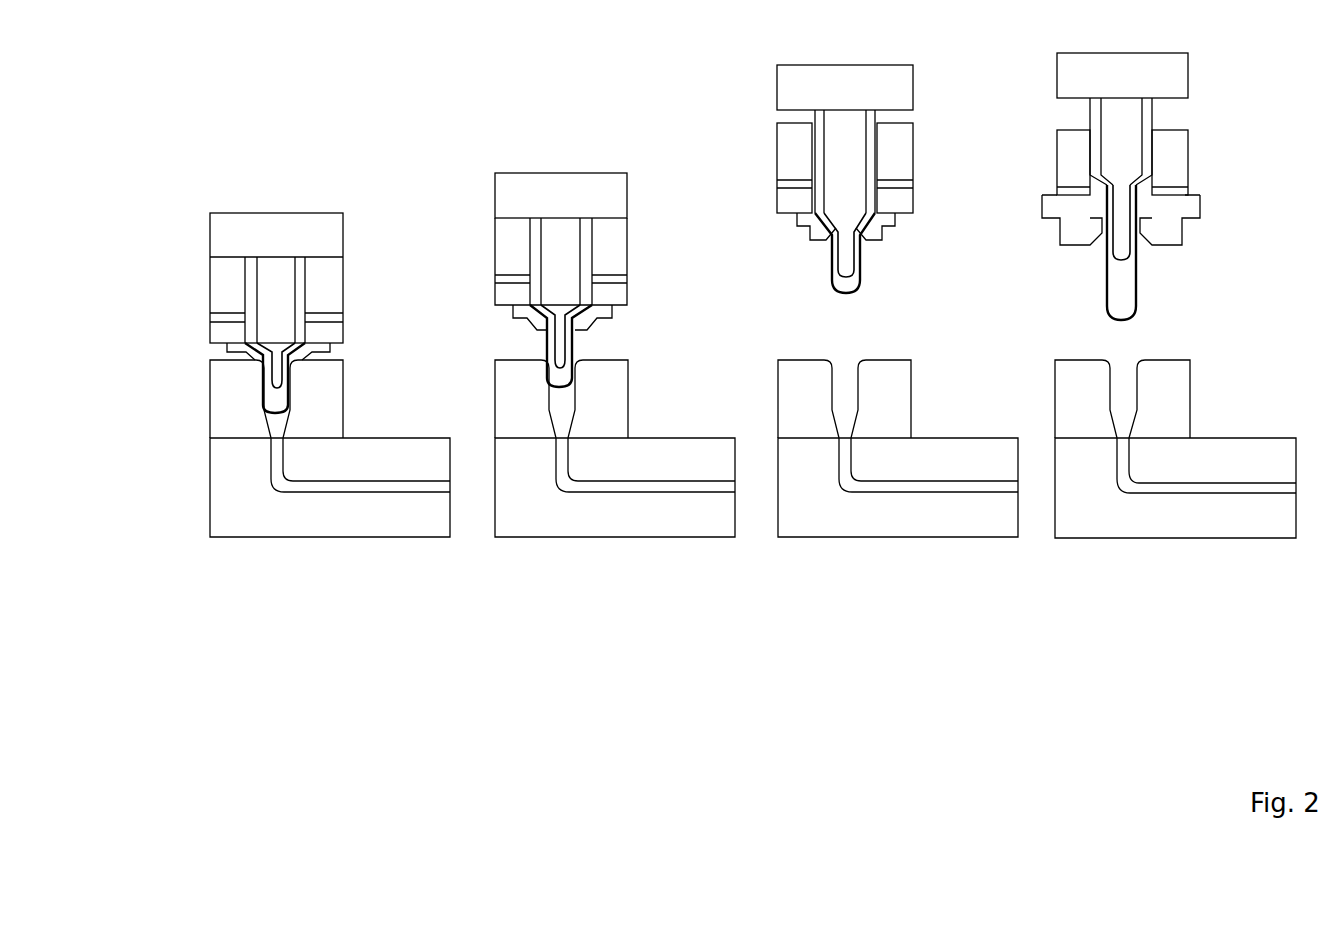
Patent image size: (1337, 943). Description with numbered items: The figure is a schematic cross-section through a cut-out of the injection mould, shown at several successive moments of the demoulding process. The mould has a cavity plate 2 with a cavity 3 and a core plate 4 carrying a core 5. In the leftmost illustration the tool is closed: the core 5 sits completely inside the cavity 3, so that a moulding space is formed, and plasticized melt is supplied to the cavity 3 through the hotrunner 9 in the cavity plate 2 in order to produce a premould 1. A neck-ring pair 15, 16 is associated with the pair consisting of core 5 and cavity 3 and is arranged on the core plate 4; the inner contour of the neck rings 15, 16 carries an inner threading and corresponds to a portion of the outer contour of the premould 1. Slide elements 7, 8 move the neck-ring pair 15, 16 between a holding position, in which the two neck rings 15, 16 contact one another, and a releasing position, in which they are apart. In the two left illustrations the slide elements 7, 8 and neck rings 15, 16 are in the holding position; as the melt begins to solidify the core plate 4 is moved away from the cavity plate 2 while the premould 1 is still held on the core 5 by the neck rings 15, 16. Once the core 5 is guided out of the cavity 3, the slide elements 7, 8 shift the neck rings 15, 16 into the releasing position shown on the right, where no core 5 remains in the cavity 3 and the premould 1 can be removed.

The premould 1 is at (1122, 297).
The cavity plate 2 is at (512, 405).
The cavity 3 is at (1118, 388).
The core plate 4 is at (578, 183).
The core 5 is at (275, 385).
The slide element 7 is at (795, 200).
The slide element 8 is at (905, 213).
The hotrunner 9 is at (343, 493).
The neck ring 15 is at (628, 335).
The neck ring 16 is at (518, 313).